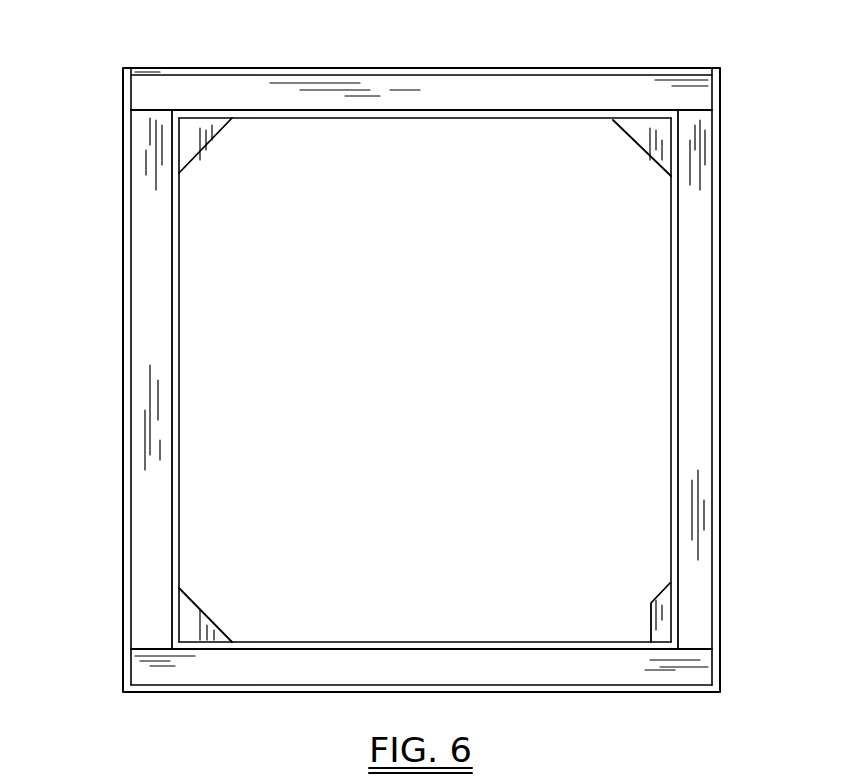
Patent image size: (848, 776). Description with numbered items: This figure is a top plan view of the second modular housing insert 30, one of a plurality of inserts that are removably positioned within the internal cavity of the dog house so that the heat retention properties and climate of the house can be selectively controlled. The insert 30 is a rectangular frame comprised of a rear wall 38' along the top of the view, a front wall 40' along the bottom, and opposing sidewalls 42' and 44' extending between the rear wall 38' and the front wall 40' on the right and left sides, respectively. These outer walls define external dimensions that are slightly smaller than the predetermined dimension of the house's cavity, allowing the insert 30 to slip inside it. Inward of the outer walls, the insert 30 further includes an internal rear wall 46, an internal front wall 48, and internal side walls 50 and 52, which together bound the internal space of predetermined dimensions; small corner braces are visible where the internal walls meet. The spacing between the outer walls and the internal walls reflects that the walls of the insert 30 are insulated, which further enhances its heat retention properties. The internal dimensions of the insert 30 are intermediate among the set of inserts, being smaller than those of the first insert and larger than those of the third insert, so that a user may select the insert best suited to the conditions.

The modular housing insert 30 is at (414, 378).
The rear wall 38' is at (421, 59).
The front wall 40' is at (421, 698).
The sidewall 42' is at (746, 379).
The sidewall 44' is at (92, 379).
The internal rear wall 46 is at (248, 116).
The internal front wall 48 is at (313, 652).
The internal side wall 50 is at (673, 465).
The internal side wall 52 is at (173, 305).